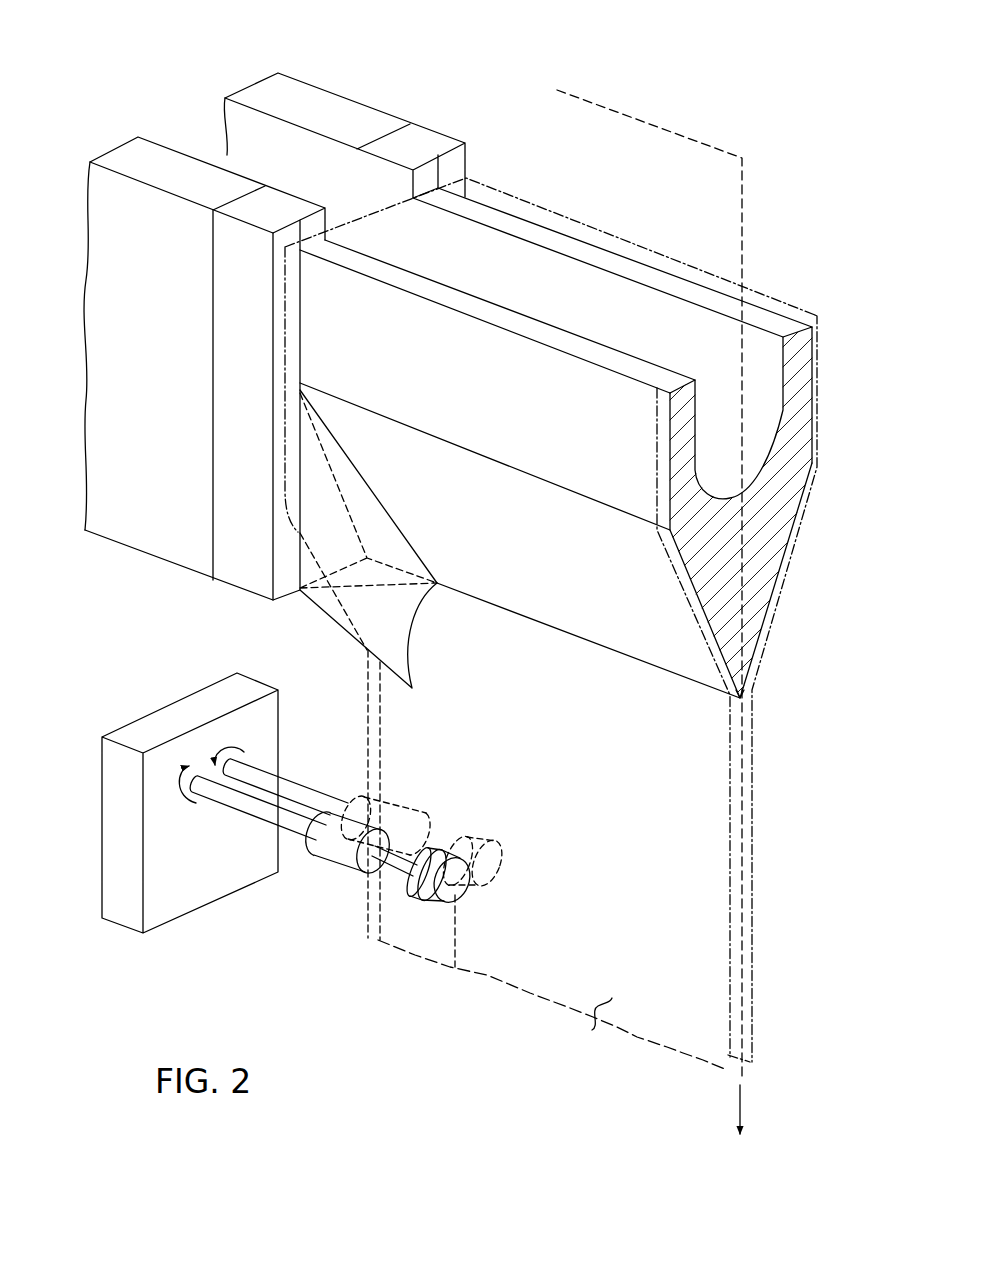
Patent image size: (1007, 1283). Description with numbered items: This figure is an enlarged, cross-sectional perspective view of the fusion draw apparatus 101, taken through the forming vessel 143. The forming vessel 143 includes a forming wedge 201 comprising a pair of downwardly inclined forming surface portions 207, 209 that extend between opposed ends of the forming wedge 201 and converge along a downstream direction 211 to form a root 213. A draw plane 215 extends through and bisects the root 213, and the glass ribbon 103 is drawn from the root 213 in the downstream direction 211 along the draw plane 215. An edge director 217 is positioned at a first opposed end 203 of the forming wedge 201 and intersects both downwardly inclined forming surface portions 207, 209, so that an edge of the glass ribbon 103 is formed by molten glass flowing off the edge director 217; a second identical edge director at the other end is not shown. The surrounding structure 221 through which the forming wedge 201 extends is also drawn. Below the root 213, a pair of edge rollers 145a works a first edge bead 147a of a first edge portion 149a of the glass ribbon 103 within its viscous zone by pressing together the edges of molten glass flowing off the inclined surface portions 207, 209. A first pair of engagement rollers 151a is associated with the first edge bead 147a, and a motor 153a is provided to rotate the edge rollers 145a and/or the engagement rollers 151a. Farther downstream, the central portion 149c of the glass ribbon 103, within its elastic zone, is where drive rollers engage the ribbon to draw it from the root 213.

The fusion draw apparatus 101 is at (739, 76).
The glass ribbon 103 is at (680, 975).
The forming vessel 143 is at (790, 251).
The pair of edge rollers 145a is at (324, 868).
The first edge bead 147a is at (367, 923).
The first edge portion 149a is at (428, 941).
The central portion 149c is at (579, 1026).
The first pair of engagement rollers 151a is at (472, 905).
The motor 153a is at (144, 950).
The forming wedge 201 is at (559, 200).
The first opposed end 203 is at (231, 358).
The downwardly inclined forming surface portion 207 is at (712, 645).
The downwardly inclined forming surface portion 209 is at (773, 624).
The downstream direction 211 is at (742, 1107).
The root 213 is at (730, 699).
The draw plane 215 is at (743, 178).
The edge director 217 is at (348, 439).
The fixture block 221 is at (98, 265).